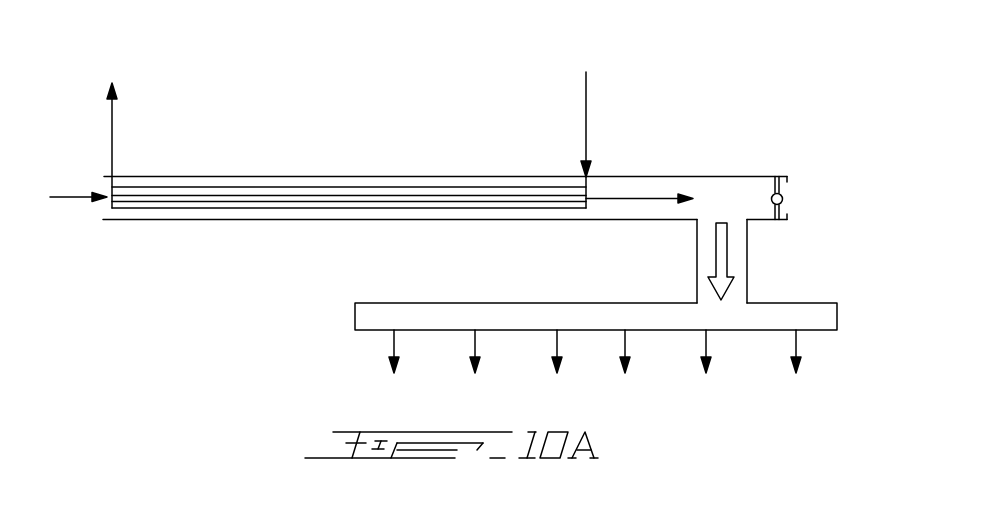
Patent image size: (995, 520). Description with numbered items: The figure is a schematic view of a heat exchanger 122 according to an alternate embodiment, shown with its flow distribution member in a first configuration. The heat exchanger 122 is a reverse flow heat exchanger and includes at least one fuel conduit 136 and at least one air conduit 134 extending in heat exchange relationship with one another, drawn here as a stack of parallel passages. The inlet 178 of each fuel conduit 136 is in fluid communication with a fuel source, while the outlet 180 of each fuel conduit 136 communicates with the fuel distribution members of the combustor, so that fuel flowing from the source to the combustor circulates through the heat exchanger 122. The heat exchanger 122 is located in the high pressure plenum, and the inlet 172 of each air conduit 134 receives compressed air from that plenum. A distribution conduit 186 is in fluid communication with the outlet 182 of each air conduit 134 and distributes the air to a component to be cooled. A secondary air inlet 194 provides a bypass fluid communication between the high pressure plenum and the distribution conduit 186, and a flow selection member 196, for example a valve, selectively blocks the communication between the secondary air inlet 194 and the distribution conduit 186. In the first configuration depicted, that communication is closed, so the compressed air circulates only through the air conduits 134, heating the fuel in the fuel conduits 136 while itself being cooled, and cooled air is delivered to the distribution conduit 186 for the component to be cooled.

The heat exchanger 122 is at (350, 83).
The air conduit 134 is at (228, 192).
The fuel conduit 136 is at (295, 193).
The inlet of the air conduit 172 is at (65, 200).
The inlet of the fuel conduit 178 is at (586, 103).
The outlet of the fuel conduit 180 is at (112, 127).
The outlet of the air conduit 182 is at (595, 208).
The distribution conduit 186 is at (355, 316).
The secondary air inlet 194 is at (782, 212).
The flow selection member 196 is at (783, 186).